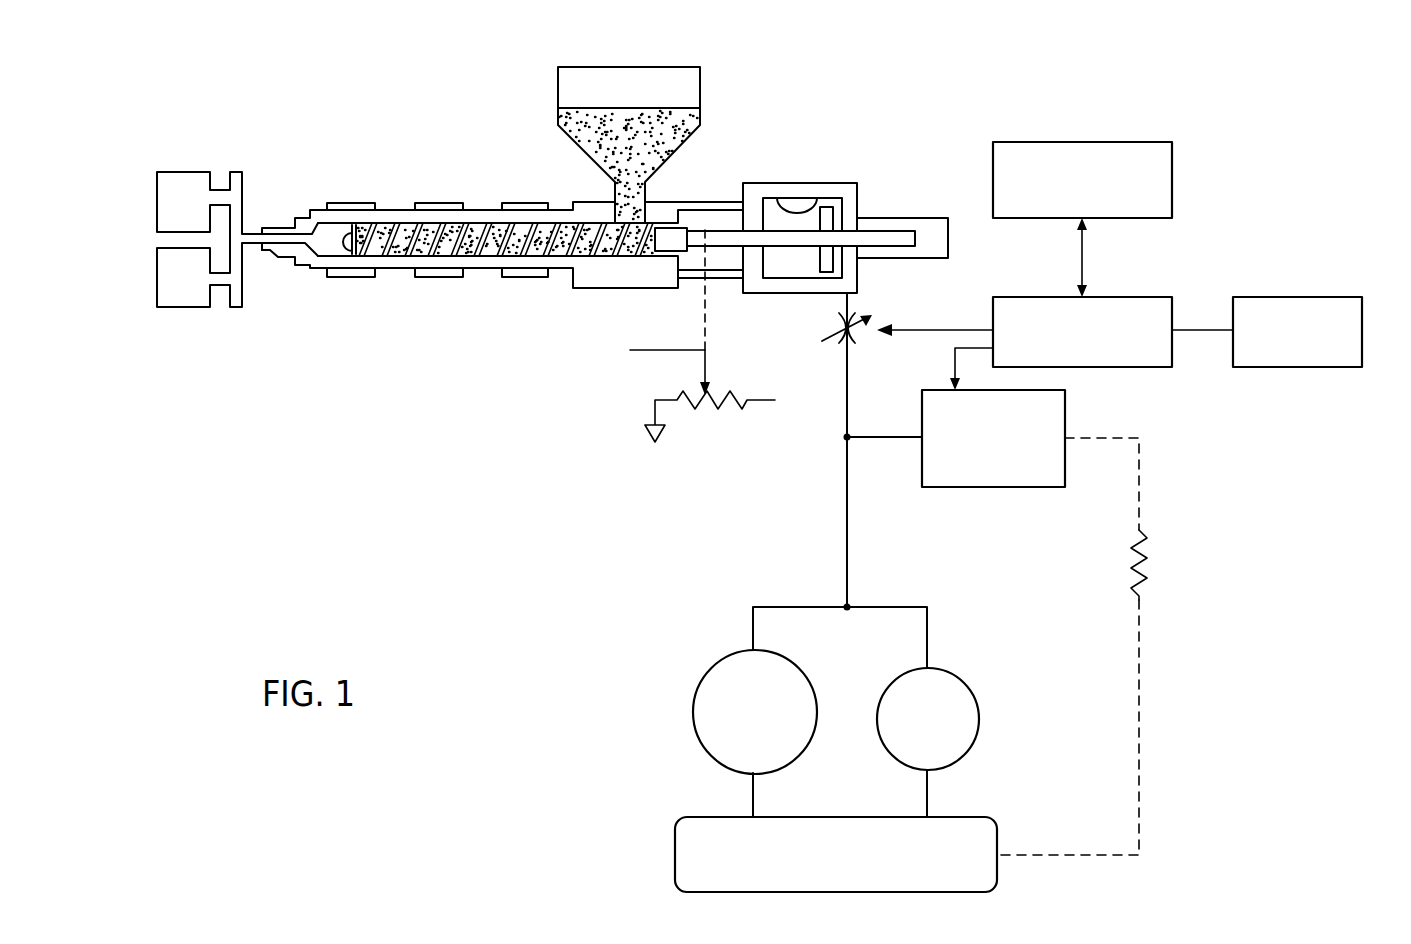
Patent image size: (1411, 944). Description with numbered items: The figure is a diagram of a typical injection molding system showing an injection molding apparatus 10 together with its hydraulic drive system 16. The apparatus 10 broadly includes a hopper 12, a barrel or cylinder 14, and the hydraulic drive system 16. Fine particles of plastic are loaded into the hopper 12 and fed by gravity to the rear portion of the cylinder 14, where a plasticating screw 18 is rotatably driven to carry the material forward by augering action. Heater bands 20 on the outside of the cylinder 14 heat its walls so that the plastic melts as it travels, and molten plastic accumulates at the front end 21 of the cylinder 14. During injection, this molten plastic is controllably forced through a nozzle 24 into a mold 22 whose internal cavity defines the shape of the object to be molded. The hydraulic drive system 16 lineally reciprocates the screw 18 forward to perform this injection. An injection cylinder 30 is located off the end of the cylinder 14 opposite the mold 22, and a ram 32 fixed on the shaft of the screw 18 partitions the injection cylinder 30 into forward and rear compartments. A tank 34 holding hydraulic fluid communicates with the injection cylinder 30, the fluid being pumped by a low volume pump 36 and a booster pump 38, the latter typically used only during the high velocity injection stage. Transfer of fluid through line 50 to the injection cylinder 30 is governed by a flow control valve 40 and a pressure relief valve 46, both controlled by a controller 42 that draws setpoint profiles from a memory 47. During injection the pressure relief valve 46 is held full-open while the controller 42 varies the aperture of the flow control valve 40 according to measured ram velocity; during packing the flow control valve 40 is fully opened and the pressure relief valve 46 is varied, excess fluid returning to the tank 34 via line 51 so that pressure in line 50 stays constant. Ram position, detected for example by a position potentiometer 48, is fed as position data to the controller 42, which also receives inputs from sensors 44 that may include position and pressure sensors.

The injection molding apparatus 10 is at (774, 92).
The hopper 12 is at (702, 83).
The barrel or cylinder 14 is at (393, 268).
The hydraulic drive system 16 is at (770, 372).
The plasticating screw 18 is at (400, 223).
The heater bands 20 is at (338, 203).
The front end of the cylinder 21 is at (317, 238).
The mold 22 is at (178, 172).
The nozzle 24 is at (272, 250).
The injection cylinder 30 is at (815, 210).
The ram 32 is at (827, 220).
The tank 34 is at (708, 817).
The low volume pump 36 is at (980, 708).
The booster pump 38 is at (695, 688).
The flow control valve 40 is at (837, 328).
The controller 42 is at (1130, 297).
The sensors 44 is at (1317, 367).
The pressure relief valve 46 is at (970, 488).
The memory 47 is at (1172, 156).
The position potentiometer 48 is at (697, 403).
The line 50 is at (845, 457).
The line 51 is at (1140, 680).